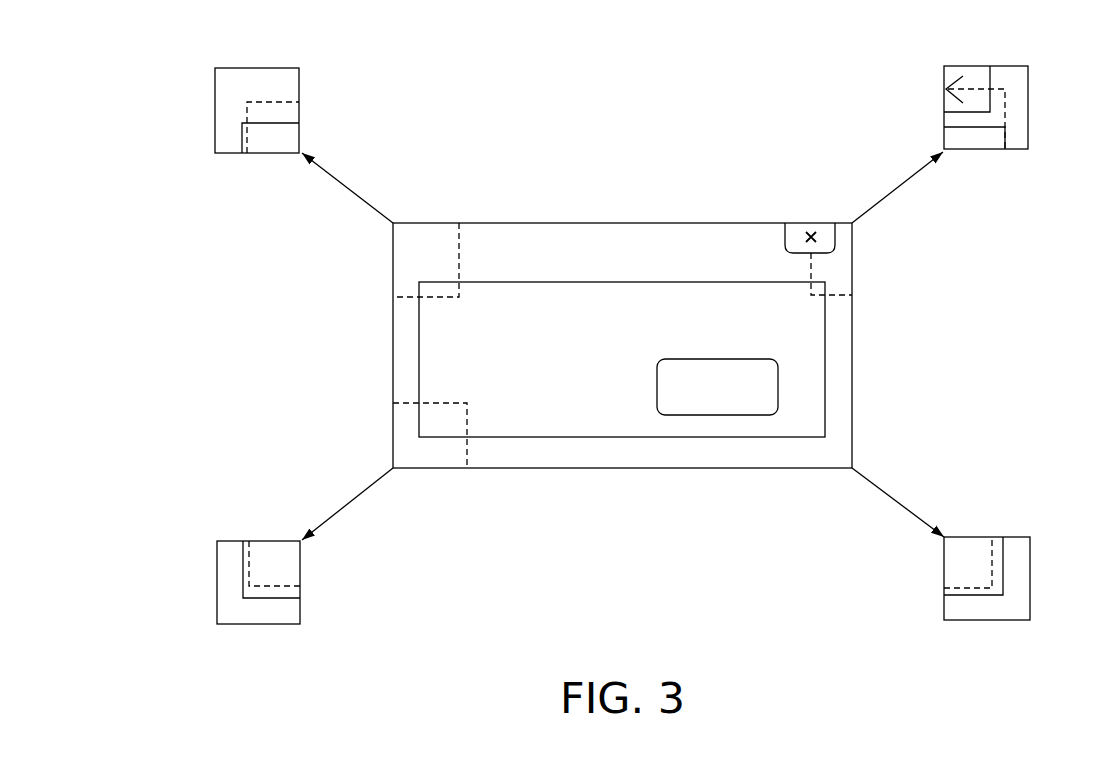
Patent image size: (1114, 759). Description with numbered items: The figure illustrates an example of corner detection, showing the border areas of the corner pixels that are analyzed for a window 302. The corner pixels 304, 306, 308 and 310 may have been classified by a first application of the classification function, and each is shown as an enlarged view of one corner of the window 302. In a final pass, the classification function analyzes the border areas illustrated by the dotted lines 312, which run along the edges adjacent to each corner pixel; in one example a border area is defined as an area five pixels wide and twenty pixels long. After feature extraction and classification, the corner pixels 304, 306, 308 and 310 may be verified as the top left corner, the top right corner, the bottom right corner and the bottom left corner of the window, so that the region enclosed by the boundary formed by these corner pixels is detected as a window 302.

The window 302 is at (614, 222).
The corner pixel 304 is at (215, 91).
The corner pixel 306 is at (1028, 80).
The corner pixel 308 is at (1030, 573).
The corner pixel 310 is at (300, 607).
The dotted lines 312 is at (268, 102).